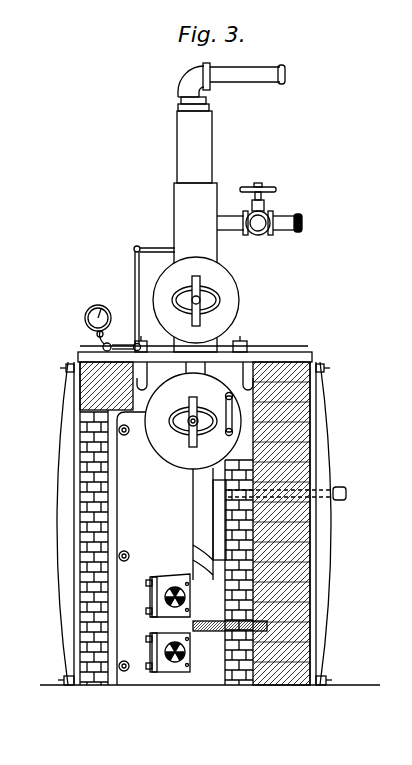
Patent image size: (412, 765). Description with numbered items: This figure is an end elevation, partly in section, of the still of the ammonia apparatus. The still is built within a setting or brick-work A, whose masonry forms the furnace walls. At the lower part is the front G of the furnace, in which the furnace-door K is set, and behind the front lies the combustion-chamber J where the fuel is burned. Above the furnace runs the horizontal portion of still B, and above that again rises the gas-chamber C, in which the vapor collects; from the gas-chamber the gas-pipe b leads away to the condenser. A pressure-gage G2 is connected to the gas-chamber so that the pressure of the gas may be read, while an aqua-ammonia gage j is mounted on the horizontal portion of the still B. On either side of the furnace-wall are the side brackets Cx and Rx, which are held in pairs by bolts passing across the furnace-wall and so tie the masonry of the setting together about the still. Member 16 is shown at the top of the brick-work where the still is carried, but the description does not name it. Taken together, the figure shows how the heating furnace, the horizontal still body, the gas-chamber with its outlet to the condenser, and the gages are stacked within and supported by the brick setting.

The setting or brick-work A is at (207, 523).
The side bracket Cx is at (55, 533).
The top plate 16 is at (289, 363).
The combustion-chamber J is at (238, 218).
The gas-pipe b is at (253, 74).
The pressure-gage G2 is at (127, 298).
The gas-chamber C is at (200, 300).
The front G is at (192, 548).
The horizontal portion of still B is at (193, 421).
The aqua-ammonia gage j is at (218, 411).
The side bracket Rx is at (322, 523).
The furnace-door K is at (153, 623).